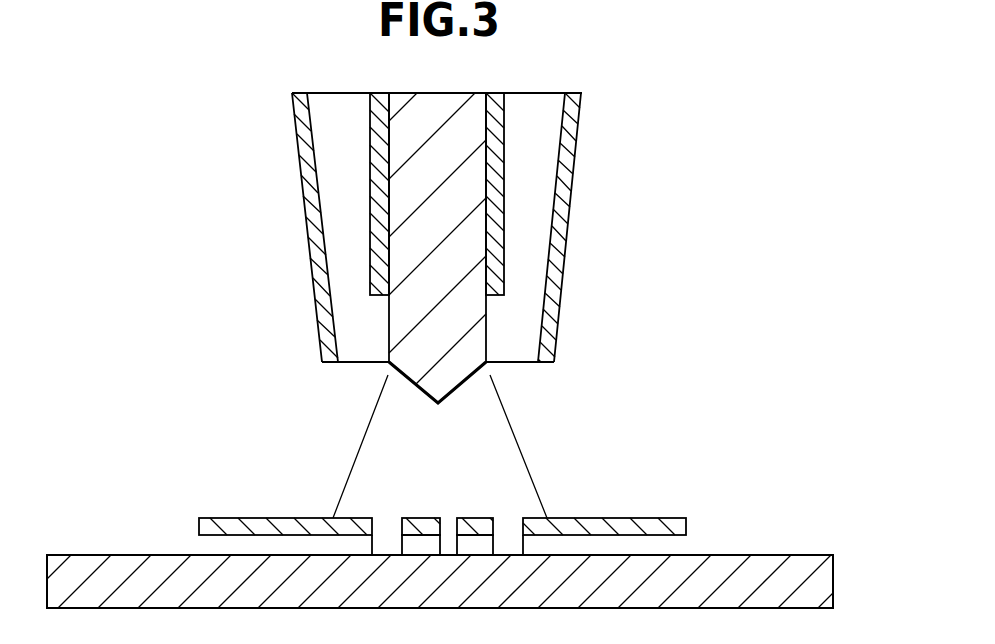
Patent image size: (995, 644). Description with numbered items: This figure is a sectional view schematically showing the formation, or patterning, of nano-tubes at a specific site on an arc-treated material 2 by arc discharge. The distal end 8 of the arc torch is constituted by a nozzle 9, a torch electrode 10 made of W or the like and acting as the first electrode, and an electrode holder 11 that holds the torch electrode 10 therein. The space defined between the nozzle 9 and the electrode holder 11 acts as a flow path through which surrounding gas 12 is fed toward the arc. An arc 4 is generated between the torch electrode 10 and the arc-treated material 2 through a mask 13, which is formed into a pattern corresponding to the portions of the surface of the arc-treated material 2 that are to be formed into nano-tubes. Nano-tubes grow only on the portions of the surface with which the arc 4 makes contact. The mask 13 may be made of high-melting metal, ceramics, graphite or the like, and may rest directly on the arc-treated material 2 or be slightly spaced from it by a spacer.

The arc-treated material 2 is at (110, 567).
The arc 4 is at (387, 488).
The distal end 8 is at (302, 207).
The nozzle 9 is at (570, 132).
The torch electrode 10 is at (465, 343).
The electrode holder 11 is at (493, 224).
The surrounding gas 12 is at (350, 323).
The mask 13 is at (620, 522).